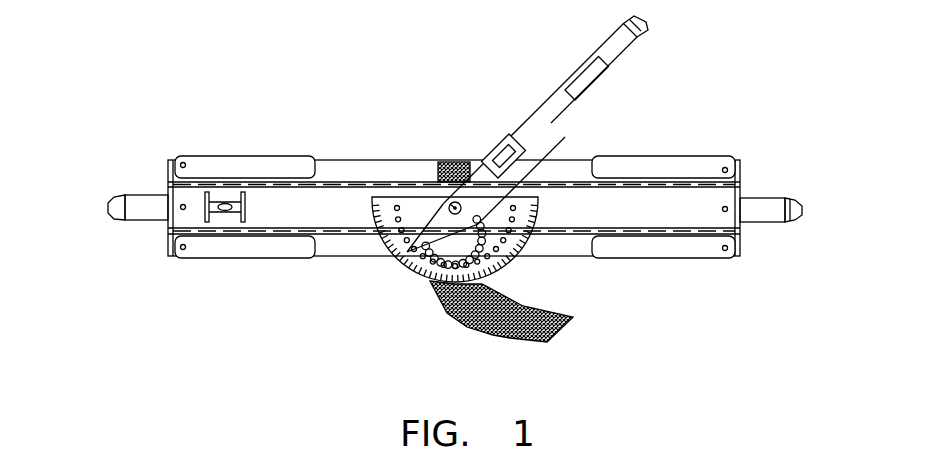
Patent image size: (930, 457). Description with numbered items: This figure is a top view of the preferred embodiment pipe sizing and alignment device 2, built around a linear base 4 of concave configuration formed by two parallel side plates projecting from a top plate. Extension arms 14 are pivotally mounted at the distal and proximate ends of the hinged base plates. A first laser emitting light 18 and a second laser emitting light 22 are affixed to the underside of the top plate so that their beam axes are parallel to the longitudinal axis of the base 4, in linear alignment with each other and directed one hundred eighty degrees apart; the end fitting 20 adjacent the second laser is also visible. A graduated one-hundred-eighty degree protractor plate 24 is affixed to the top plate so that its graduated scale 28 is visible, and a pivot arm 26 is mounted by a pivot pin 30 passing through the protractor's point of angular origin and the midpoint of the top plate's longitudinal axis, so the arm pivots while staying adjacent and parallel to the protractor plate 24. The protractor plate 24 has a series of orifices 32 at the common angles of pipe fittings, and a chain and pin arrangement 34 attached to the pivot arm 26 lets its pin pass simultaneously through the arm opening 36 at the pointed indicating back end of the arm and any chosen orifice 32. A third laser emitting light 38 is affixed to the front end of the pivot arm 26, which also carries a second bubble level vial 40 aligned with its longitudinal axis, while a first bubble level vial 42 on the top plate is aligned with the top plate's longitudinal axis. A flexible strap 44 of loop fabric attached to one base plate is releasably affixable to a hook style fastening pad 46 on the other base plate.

The device 2 is at (150, 122).
The linear base 4 is at (172, 223).
The extension arms 14 is at (218, 258).
The first laser emitting light 18 is at (120, 218).
The end hole 20 is at (728, 212).
The second laser emitting light 22 is at (762, 196).
The 180 degree protractor plate 24 is at (418, 272).
The pivot arm 26 is at (547, 100).
The graduated scale 28 is at (522, 263).
The pivot pin 30 is at (448, 204).
The orifices 32 is at (400, 232).
The chain and pin arrangement 34 is at (480, 220).
The arm opening 36 is at (410, 250).
The third laser emitting light 38 is at (630, 48).
The second bubble level vial 40 is at (500, 146).
The first bubble level vial 42 is at (228, 214).
The flexible strap 44 is at (557, 332).
The hook style fastening pad 46 is at (450, 161).